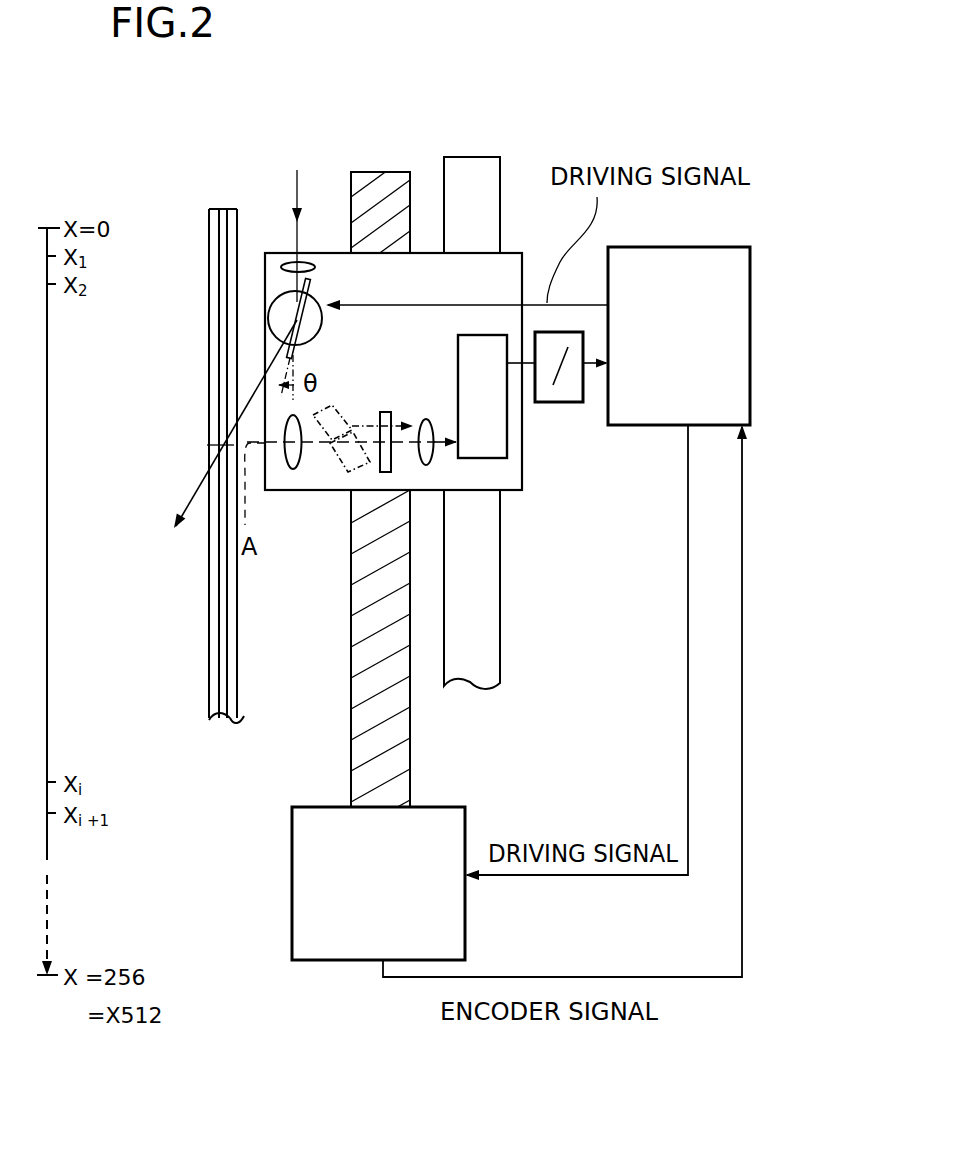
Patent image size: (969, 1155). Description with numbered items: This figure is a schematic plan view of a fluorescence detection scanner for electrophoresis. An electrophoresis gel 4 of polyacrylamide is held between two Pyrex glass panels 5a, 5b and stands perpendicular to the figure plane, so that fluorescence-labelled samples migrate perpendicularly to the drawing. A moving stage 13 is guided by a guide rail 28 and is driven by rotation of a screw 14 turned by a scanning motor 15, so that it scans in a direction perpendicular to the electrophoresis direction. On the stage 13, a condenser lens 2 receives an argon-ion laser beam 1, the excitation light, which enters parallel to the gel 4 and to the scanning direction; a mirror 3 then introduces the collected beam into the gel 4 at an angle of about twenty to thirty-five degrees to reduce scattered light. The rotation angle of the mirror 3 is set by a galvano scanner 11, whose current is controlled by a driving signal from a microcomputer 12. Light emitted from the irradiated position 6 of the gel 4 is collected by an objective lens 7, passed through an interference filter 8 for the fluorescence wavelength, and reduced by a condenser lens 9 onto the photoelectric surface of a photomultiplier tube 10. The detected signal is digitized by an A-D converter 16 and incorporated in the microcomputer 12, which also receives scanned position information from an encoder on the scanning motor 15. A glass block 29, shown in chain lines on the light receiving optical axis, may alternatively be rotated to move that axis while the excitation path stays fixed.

The laser beam 1 is at (298, 186).
The condenser lens 2 is at (302, 262).
The mirror 3 is at (312, 296).
The electrophoresis gel 4 is at (223, 209).
The glass panel 5a is at (238, 216).
The glass panel 5b is at (206, 227).
The irradiated position 6 is at (233, 445).
The objective lens 7 is at (300, 466).
The interference filter 8 is at (393, 457).
The condenser lens 9 is at (433, 455).
The photomultiplier tube 10 is at (488, 453).
The galvano scanner 11 is at (320, 326).
The microcomputer 12 is at (673, 247).
The moving stage 13 is at (523, 438).
The screw 14 is at (411, 716).
The scanning motor 15 is at (465, 842).
The A-D converter 16 is at (557, 402).
The guide rail 28 is at (502, 190).
The glass block 29 is at (345, 468).